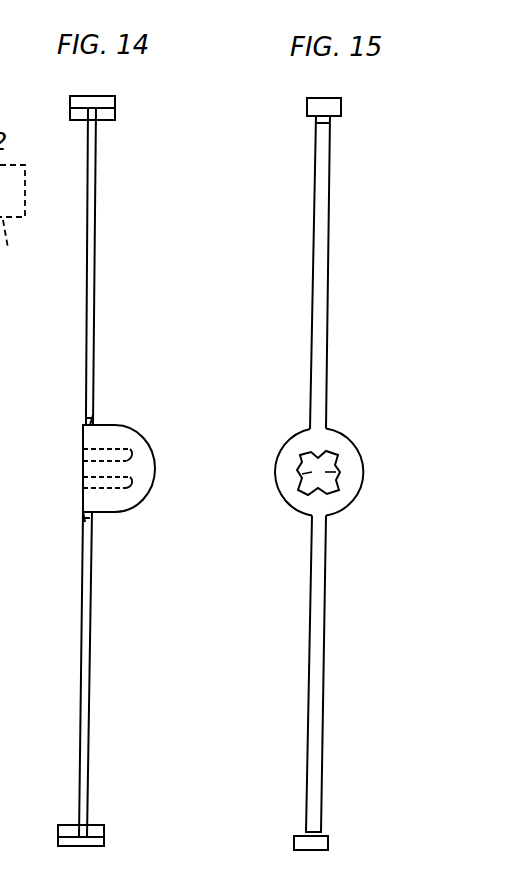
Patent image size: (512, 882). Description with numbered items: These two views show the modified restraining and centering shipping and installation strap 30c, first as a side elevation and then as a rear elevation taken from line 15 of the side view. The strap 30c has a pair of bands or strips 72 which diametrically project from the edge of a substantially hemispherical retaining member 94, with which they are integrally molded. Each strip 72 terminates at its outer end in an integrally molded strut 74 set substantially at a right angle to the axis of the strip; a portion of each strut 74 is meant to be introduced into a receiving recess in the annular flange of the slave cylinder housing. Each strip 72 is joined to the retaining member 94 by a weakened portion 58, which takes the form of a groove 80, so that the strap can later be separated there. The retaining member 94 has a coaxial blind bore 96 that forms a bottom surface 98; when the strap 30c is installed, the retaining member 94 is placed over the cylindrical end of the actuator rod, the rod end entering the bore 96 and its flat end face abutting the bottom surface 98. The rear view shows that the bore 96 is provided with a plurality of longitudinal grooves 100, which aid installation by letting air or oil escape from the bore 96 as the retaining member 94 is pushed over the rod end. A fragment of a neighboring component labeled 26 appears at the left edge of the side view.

In FIG. 14, the line 15— 15 is at (128, 85).
In FIG. 14, the housing member 26 is at (17, 225).
In FIG. 14, the restraining strap 30c is at (127, 472).
In FIG. 15, the restraining strap 30c is at (351, 474).
In FIG. 14, the weakened portion 58 is at (96, 411).
In FIG. 14, the band or strip 72 is at (98, 298).
In FIG. 15, the band or strip 72 is at (329, 268).
In FIG. 14, the strut 74 is at (112, 104).
In FIG. 15, the strut 74 is at (333, 105).
In FIG. 14, the groove 80 is at (92, 418).
In FIG. 14, the retaining member 94 is at (118, 425).
In FIG. 15, the retaining member 94 is at (292, 512).
In FIG. 14, the blind bore 96 is at (142, 456).
In FIG. 15, the blind bore 96 is at (305, 470).
In FIG. 14, the bottom surface 98 is at (148, 483).
In FIG. 15, the bottom surface 98 is at (336, 472).
In FIG. 15, the longitudinal groove 100 is at (328, 457).